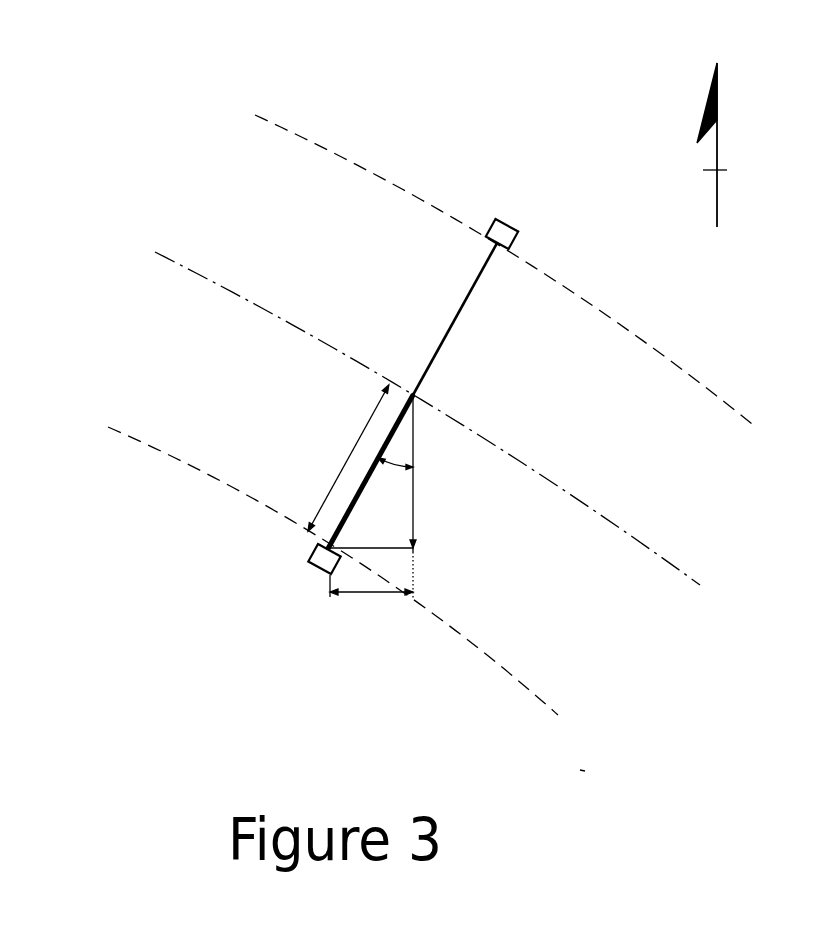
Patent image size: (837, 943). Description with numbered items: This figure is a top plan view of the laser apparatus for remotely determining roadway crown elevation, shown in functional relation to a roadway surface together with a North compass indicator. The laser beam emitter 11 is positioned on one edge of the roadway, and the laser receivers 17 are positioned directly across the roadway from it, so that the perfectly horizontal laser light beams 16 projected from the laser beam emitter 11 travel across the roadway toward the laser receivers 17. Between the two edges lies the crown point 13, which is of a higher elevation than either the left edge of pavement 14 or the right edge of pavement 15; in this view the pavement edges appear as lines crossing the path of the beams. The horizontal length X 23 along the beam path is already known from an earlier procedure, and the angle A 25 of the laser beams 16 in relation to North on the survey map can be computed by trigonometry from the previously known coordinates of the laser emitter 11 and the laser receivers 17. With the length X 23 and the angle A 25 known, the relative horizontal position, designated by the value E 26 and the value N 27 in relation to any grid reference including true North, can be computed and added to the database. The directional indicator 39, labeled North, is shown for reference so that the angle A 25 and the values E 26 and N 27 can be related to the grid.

The laser beam emitter 11 is at (318, 569).
The crown point 13 is at (412, 390).
The left edge of pavement 14 is at (502, 668).
The right edge of pavement 15 is at (705, 388).
The laser light beams 16 is at (485, 268).
The laser receivers 17 is at (510, 220).
The horizontal length X 23 is at (334, 476).
The angle A 25 is at (400, 464).
The value E 26 is at (353, 594).
The value N 27 is at (416, 507).
The directional indicator 39 is at (735, 70).